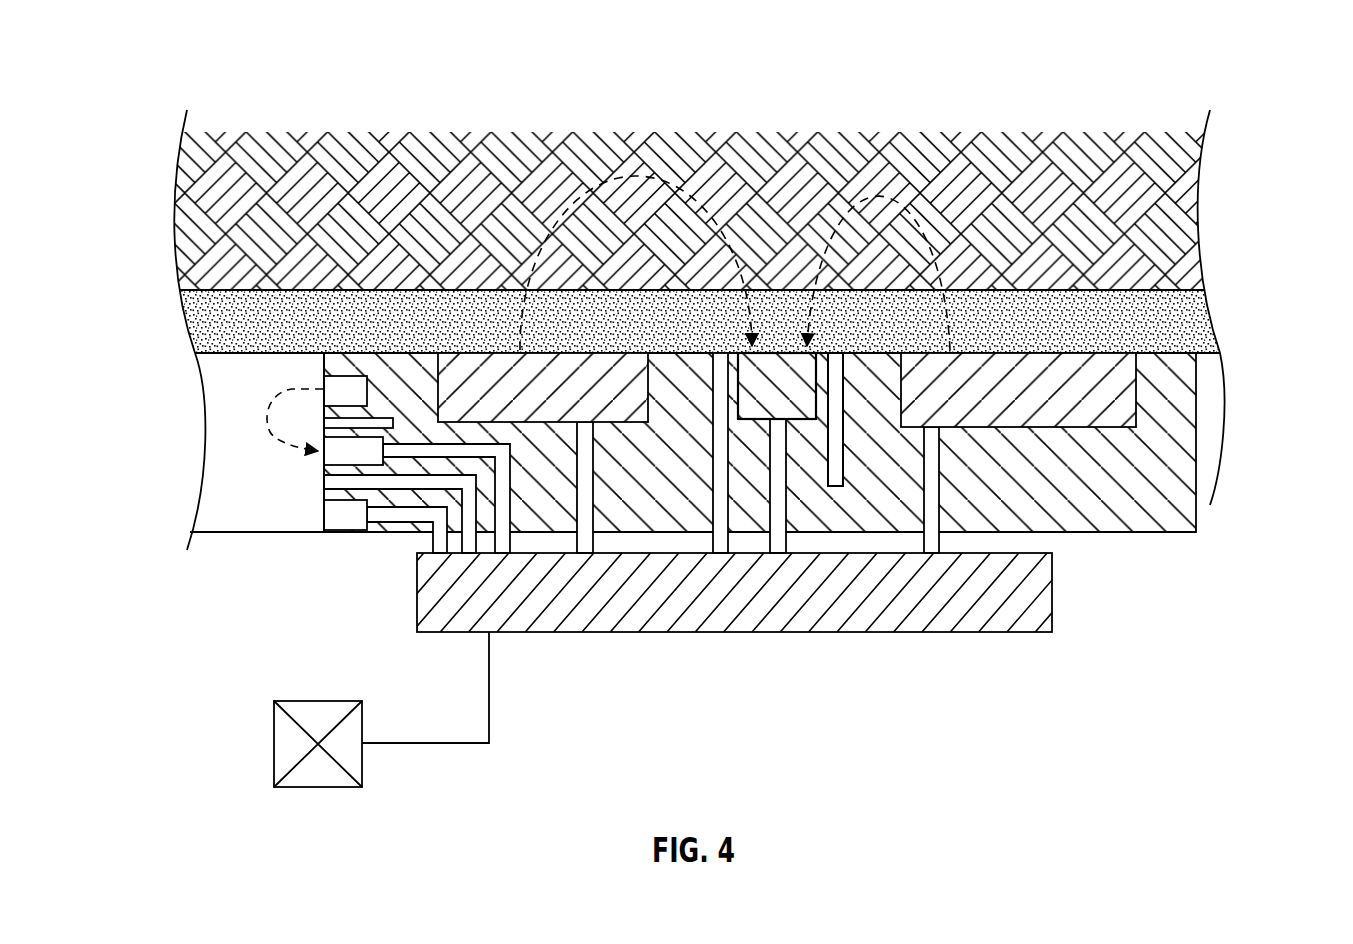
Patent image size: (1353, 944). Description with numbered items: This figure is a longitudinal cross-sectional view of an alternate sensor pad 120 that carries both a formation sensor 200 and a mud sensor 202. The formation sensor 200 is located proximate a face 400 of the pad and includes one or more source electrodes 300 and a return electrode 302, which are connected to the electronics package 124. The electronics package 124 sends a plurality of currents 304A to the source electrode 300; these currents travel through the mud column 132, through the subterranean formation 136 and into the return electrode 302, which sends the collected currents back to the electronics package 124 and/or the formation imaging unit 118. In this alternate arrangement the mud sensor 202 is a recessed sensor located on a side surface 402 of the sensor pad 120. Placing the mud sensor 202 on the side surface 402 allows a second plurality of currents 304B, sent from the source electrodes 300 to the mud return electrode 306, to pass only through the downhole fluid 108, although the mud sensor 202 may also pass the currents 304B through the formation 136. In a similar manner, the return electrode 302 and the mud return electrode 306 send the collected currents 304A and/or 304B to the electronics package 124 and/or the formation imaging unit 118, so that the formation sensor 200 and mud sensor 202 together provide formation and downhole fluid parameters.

The downhole fluid 108 is at (1213, 422).
The formation imaging unit 118 is at (362, 764).
The sensor pad 120 is at (1117, 533).
The electronics package 124 is at (968, 634).
The mud column 132 is at (222, 308).
The subterranean formation 136 is at (1187, 172).
The formation sensor 200 is at (833, 346).
The mud sensor 202 is at (290, 465).
The source electrode 300 is at (492, 353).
The return electrode 302 is at (783, 371).
The plurality of currents 304A is at (638, 178).
The plurality of currents 304B is at (268, 415).
The mud return electrode 306 is at (340, 457).
The face 400 is at (1182, 353).
The side surface 402 is at (323, 357).